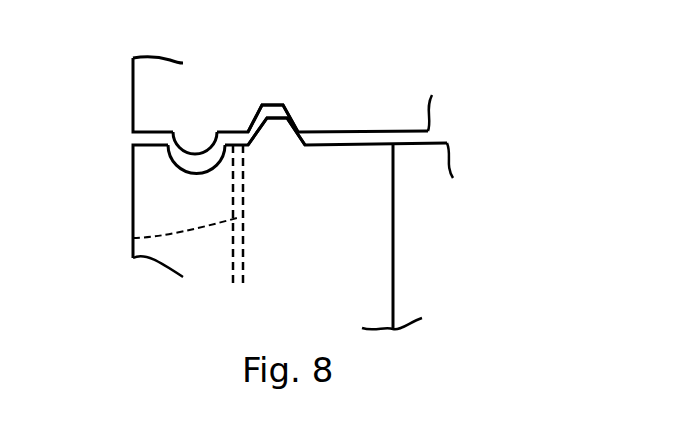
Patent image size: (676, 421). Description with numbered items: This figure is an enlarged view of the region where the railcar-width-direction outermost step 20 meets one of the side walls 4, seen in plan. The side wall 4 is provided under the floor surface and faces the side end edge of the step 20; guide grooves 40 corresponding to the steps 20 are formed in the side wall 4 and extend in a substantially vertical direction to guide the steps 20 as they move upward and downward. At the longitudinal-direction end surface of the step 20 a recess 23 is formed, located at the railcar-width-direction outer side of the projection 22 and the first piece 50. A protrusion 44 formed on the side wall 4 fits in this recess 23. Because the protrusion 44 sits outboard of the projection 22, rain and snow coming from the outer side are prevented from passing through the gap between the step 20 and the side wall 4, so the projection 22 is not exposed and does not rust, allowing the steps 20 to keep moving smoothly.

The side wall 4 is at (143, 87).
The protrusion 44 is at (187, 132).
The recess 23 is at (203, 165).
The guide groove 40 is at (275, 104).
The projection 22 is at (277, 137).
The step 20 is at (432, 173).
The first piece 50 is at (133, 238).